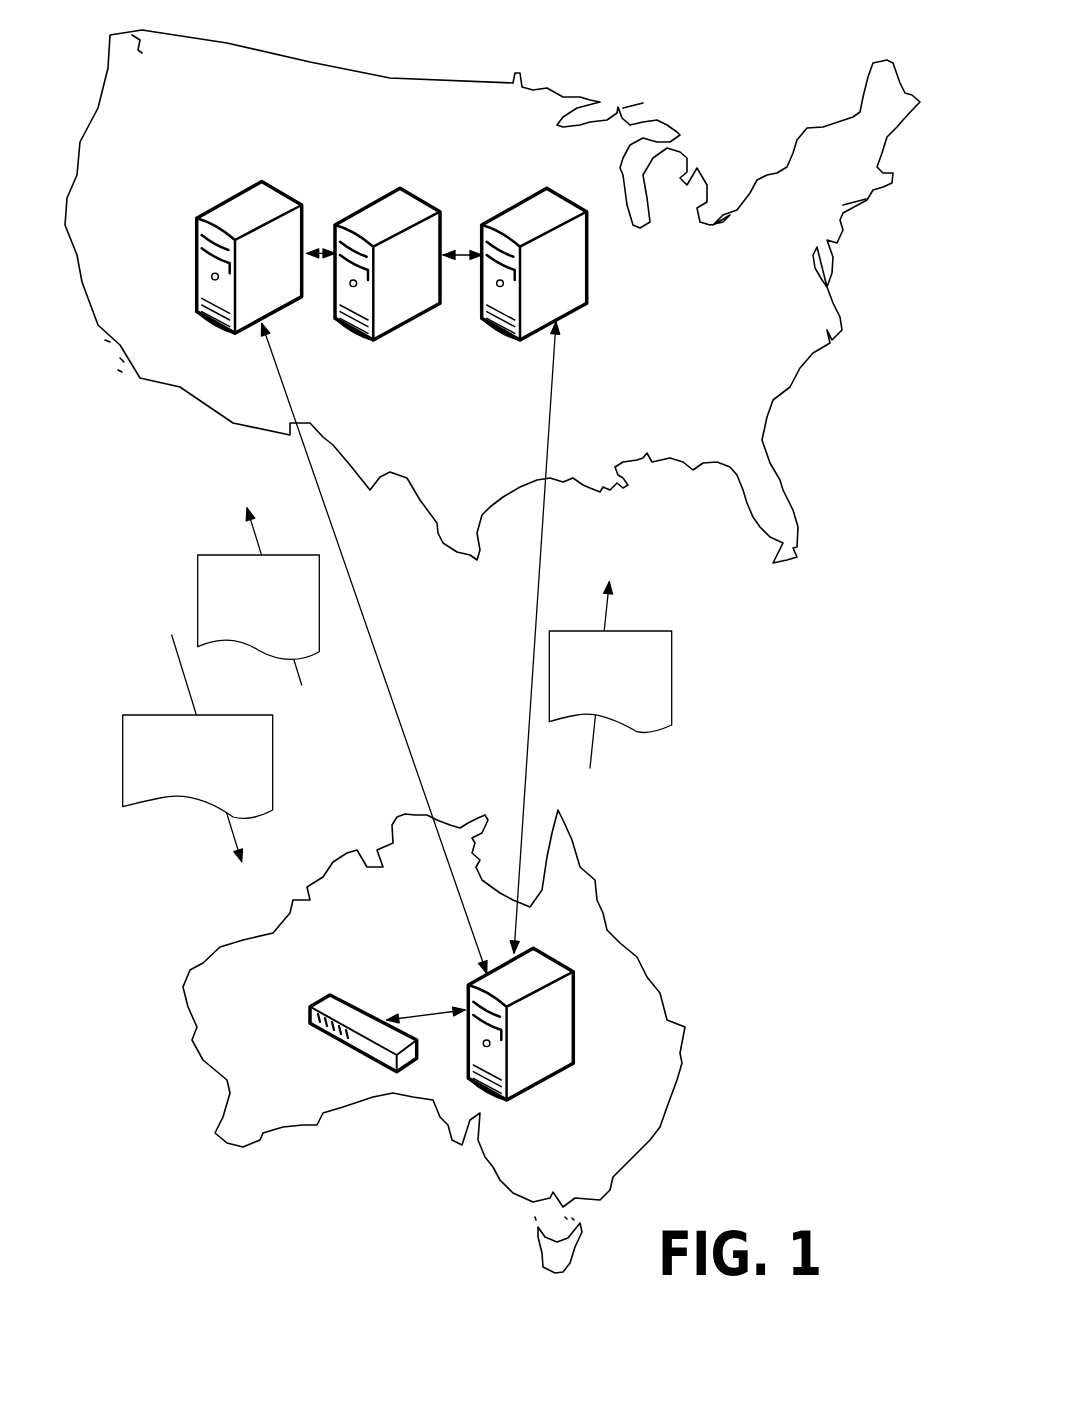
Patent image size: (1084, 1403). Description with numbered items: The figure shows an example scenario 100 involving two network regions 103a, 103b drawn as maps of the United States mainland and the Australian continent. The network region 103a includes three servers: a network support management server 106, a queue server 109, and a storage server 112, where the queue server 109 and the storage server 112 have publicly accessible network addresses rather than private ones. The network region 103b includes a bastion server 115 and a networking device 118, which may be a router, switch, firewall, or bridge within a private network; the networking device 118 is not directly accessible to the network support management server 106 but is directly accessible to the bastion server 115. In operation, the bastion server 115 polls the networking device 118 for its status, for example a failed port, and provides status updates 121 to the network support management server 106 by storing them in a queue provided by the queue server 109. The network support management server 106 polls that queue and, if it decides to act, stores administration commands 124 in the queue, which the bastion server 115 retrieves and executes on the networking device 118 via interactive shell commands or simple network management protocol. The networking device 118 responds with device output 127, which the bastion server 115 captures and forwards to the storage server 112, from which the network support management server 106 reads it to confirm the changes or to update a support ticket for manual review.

The example scenario 100 is at (862, 1080).
The network region 103a is at (760, 375).
The network region 103b is at (245, 1077).
The network support management server 106 is at (385, 217).
The queue server 109 is at (243, 207).
The storage server 112 is at (535, 212).
The bastion server 115 is at (533, 1050).
The networking device 118 is at (367, 1025).
The status updates 121 is at (259, 596).
The commands 124 is at (198, 748).
The device output 127 is at (610, 675).